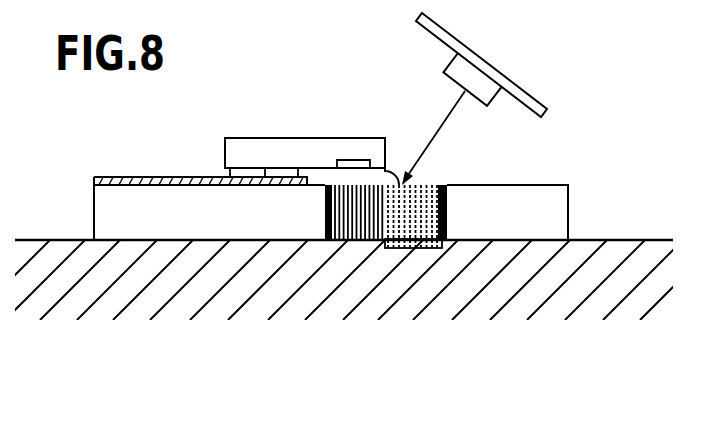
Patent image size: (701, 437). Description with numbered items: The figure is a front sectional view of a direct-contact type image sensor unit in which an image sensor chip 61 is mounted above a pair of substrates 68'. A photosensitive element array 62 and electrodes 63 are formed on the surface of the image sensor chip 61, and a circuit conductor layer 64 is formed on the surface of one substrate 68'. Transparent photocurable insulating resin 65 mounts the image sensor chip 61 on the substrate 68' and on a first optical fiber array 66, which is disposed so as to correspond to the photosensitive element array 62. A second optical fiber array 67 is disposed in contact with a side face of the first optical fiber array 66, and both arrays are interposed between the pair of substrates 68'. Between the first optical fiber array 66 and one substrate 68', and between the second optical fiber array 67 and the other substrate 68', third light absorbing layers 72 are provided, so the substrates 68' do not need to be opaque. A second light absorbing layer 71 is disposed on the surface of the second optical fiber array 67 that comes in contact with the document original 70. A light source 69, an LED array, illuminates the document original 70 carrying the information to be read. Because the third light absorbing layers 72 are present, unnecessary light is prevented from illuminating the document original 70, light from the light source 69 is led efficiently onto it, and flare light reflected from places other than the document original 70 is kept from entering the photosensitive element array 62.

The image sensor chip 61 is at (272, 143).
The photosensitive element array 62 is at (357, 162).
The electrodes 63 is at (283, 176).
The circuit conductor layer 64 is at (126, 177).
The transparent photocurable insulating resin 65 is at (330, 180).
The first optical fiber array 66 is at (358, 240).
The second optical fiber array 67 is at (417, 248).
The substrates 68' is at (343, 207).
The light source 69 is at (503, 72).
The document original 70 is at (165, 295).
The second light absorbing layer 71 is at (409, 243).
The third light absorbing layers 72 is at (327, 242).